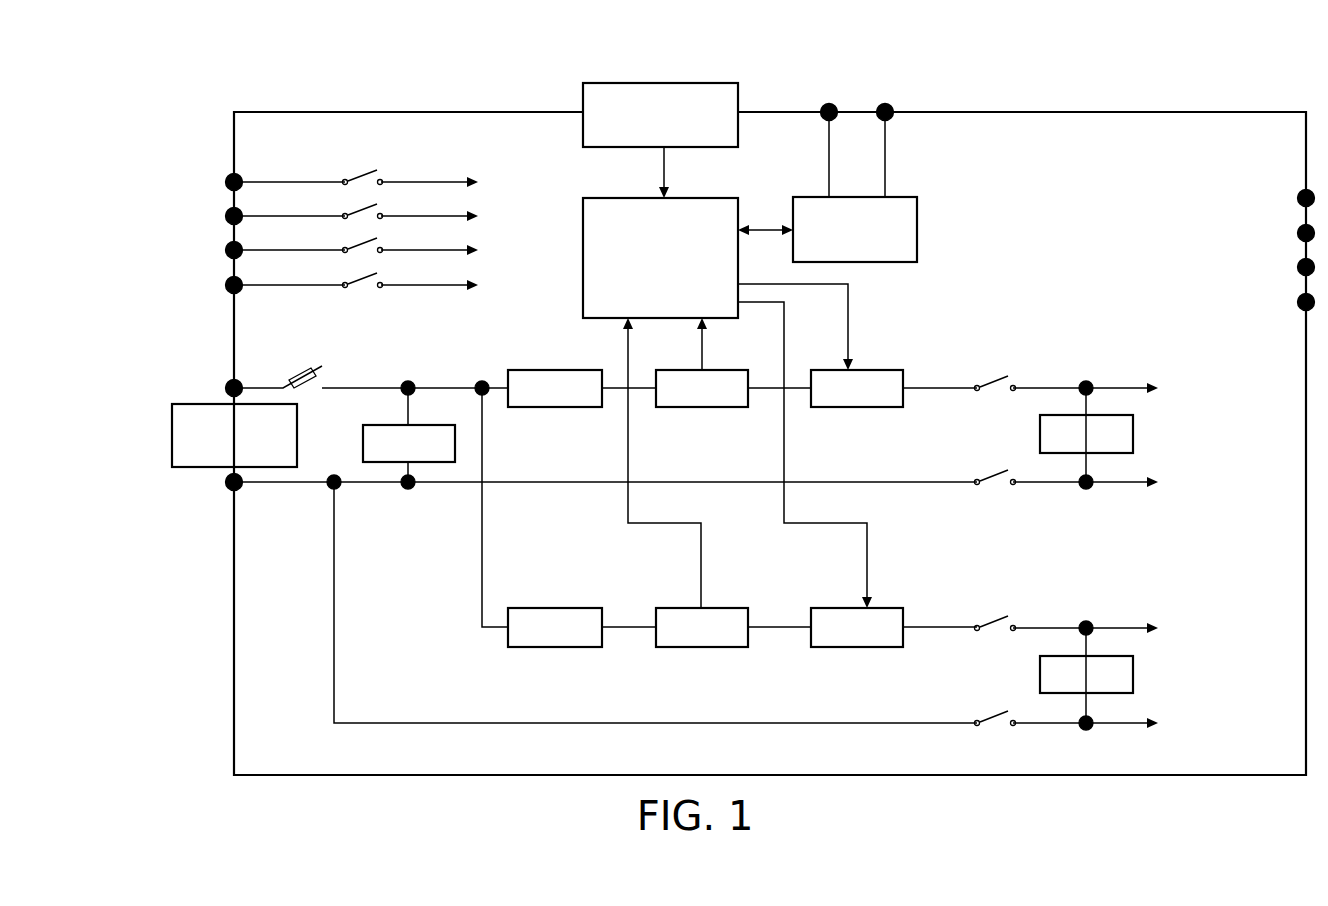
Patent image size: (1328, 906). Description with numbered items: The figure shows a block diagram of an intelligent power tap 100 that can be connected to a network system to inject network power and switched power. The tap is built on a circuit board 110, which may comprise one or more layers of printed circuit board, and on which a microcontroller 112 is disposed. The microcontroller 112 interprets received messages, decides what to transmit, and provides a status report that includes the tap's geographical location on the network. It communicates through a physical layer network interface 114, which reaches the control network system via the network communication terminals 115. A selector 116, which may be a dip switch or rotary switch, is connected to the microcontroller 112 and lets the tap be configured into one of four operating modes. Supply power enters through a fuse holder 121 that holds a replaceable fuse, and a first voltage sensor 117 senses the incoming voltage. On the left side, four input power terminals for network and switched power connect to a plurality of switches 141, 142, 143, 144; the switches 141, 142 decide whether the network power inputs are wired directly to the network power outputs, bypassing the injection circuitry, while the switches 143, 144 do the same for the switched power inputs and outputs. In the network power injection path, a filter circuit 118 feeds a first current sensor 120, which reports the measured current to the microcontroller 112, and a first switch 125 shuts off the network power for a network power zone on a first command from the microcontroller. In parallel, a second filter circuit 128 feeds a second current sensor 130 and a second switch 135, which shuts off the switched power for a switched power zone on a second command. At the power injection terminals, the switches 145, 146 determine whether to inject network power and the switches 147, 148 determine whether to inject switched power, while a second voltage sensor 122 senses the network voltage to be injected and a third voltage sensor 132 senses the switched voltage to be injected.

The intelligent power tap 100 is at (182, 48).
The circuit board 110 is at (234, 132).
The microcontroller 112 is at (641, 303).
The physical layer network interface 114 is at (836, 242).
The network communication terminals 115 is at (853, 106).
The selector 116 is at (641, 127).
The first voltage sensor 117 is at (390, 456).
The filter circuit 118 is at (536, 401).
The first current sensor 120 is at (683, 401).
The fuse holder 121 is at (299, 375).
The second voltage sensor 122 is at (1067, 446).
The first switch 125 is at (838, 401).
The second filter circuit 128 is at (536, 640).
The second current sensor 130 is at (683, 640).
The third voltage sensor 132 is at (1067, 686).
The second switch 135 is at (838, 640).
The switch 141 is at (362, 176).
The switch 142 is at (362, 210).
The switch 143 is at (362, 244).
The switch 144 is at (362, 279).
The switch 145 is at (992, 382).
The switch 146 is at (992, 476).
The switch 147 is at (992, 622).
The switch 148 is at (992, 717).